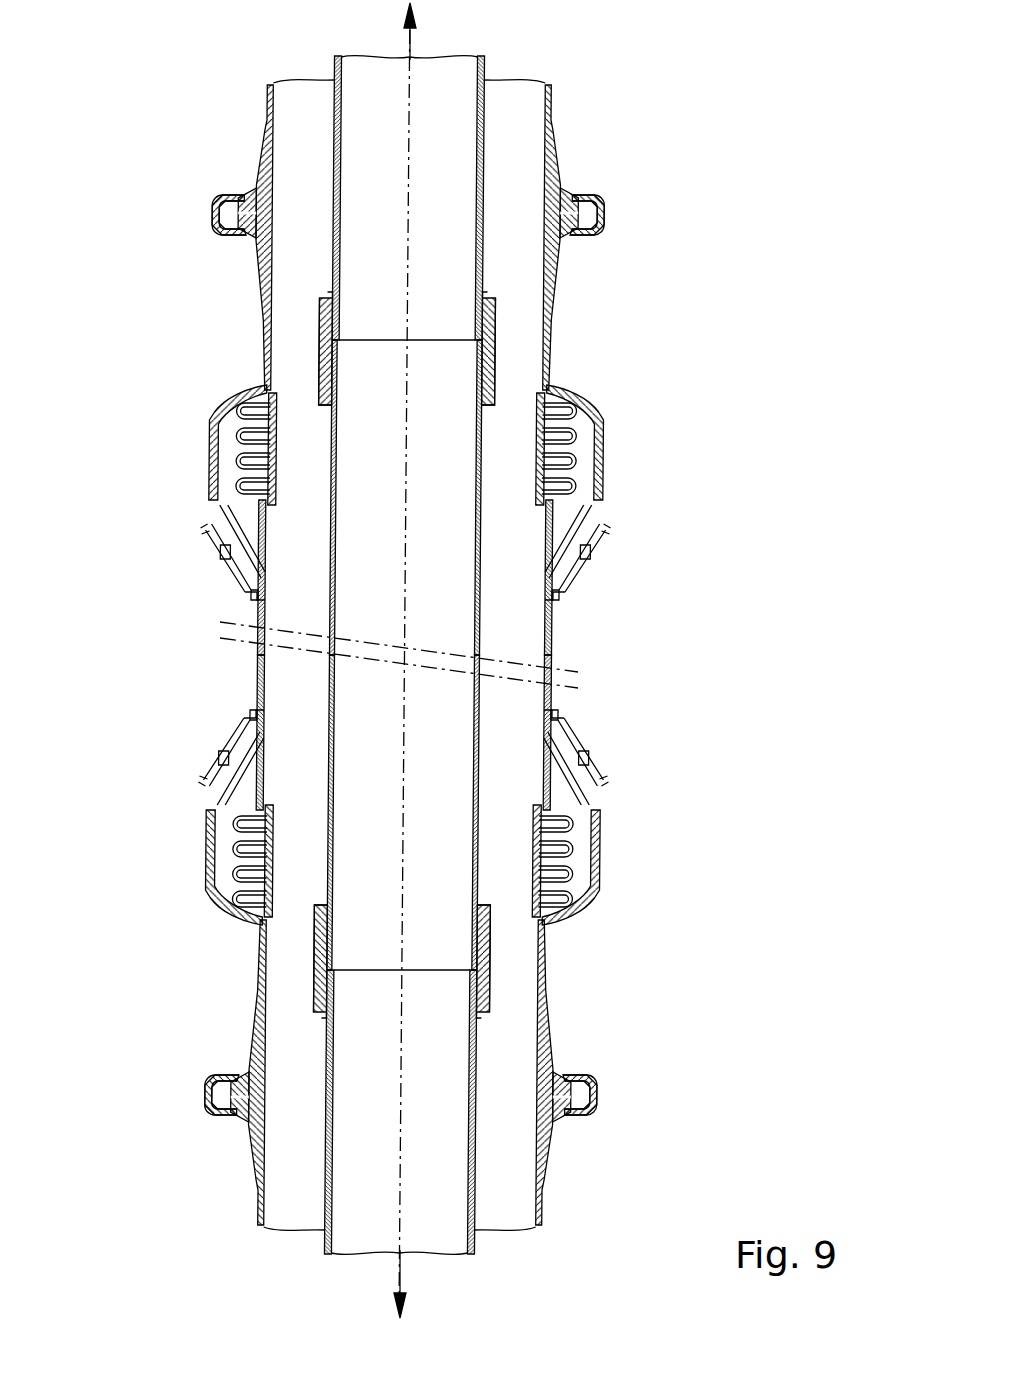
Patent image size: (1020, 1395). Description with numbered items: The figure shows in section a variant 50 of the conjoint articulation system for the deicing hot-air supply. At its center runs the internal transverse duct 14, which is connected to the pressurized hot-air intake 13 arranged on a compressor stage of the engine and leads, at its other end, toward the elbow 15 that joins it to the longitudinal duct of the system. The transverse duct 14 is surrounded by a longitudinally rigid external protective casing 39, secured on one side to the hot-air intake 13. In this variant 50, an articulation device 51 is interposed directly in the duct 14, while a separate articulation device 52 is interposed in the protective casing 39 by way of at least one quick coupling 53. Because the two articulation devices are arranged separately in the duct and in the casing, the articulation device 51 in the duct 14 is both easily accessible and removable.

The pressurized hot-air intake 13 is at (430, 31).
The internal transverse duct 14 is at (458, 80).
The elbow 15 is at (423, 1285).
The external protective casing 39 is at (552, 102).
The variant of the conjoint articulation system 50 is at (172, 614).
The articulation device 51 is at (496, 627).
The articulation device 52 is at (630, 490).
The quick coupling 53 is at (604, 204).